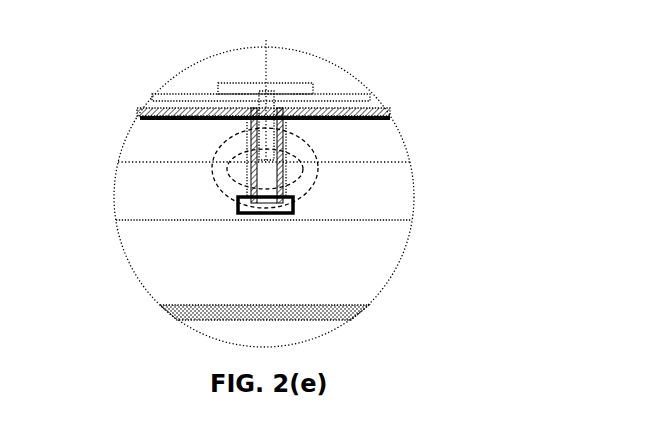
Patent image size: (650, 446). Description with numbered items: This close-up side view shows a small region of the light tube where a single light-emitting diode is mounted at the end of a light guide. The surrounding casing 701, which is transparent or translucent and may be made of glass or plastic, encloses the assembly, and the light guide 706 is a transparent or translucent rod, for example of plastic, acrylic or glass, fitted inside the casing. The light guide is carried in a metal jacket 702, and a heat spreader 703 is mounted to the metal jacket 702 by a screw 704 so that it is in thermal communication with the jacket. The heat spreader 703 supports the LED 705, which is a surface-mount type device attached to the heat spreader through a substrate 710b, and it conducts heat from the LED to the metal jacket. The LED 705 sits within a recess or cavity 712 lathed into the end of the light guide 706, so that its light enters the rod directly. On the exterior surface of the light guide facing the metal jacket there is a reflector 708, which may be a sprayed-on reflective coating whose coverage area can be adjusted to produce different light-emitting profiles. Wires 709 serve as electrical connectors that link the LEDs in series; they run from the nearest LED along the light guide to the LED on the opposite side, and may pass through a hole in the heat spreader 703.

The casing 701 is at (231, 78).
The metal jacket 702 is at (360, 88).
The heat spreader 703 is at (278, 215).
The screw 704 is at (265, 85).
The LED 705 is at (302, 181).
The light guide 706 is at (351, 162).
The reflector 708 is at (138, 108).
The wires 709 is at (228, 205).
The substrate 710b is at (241, 133).
The cavity 712 is at (316, 209).